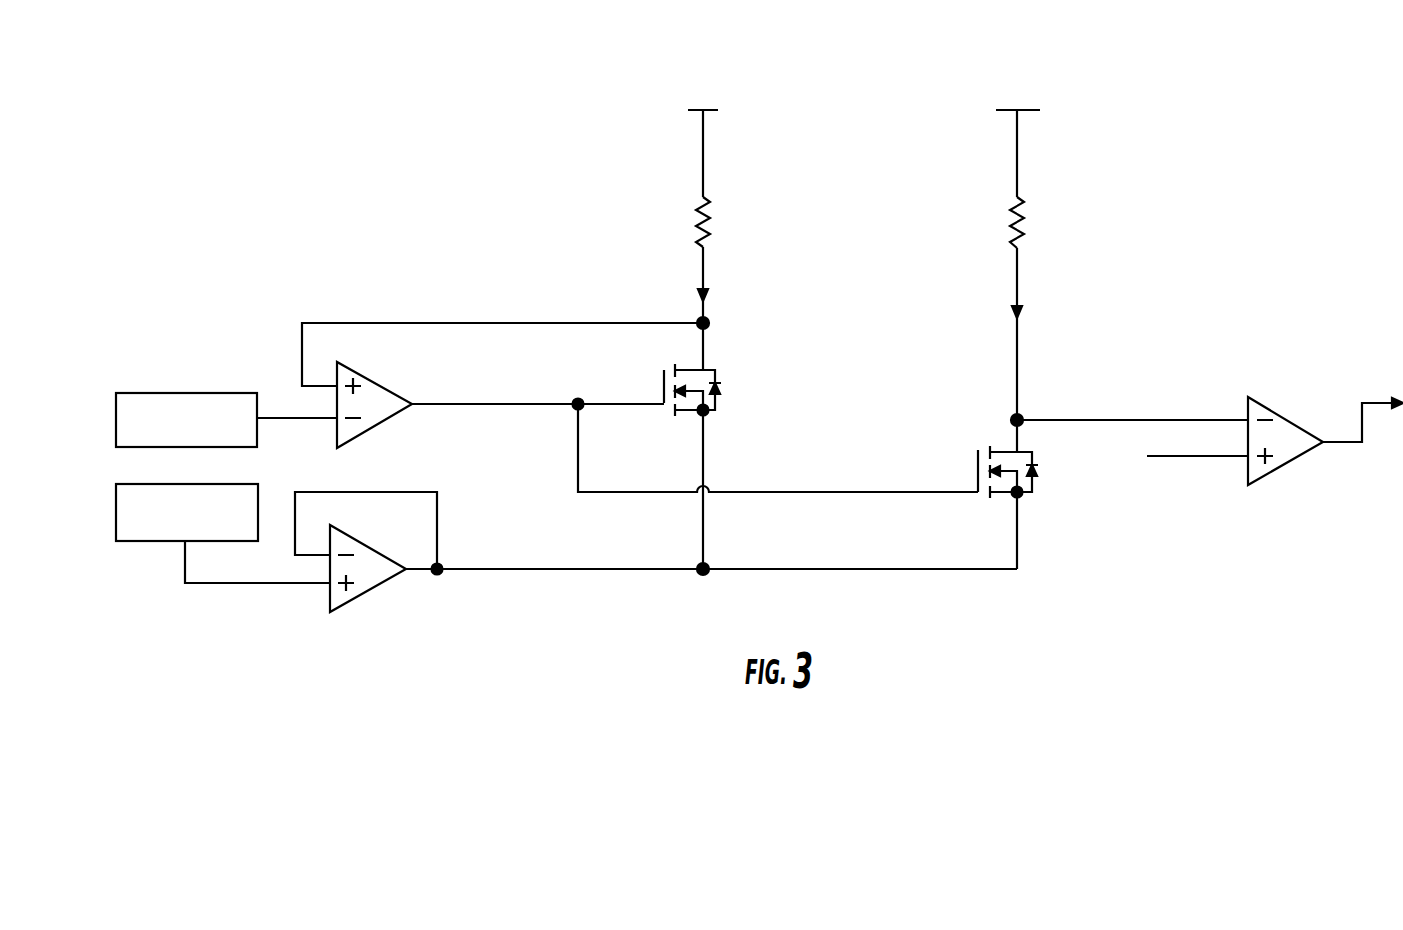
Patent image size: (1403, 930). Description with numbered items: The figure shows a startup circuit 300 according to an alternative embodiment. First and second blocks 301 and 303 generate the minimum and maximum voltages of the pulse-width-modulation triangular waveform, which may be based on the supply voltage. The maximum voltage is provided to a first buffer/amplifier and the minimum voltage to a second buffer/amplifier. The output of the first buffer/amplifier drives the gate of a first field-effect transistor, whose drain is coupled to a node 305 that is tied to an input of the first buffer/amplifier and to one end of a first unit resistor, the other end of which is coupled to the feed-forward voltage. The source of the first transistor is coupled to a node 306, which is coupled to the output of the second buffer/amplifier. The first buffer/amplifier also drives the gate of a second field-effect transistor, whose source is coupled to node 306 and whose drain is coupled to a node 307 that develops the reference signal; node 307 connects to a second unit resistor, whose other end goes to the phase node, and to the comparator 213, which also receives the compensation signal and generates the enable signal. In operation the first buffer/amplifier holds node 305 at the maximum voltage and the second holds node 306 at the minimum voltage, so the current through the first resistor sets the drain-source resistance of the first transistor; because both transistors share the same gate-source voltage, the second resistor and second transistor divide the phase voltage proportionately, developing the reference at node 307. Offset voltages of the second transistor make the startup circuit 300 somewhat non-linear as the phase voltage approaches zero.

The startup circuit 300 is at (352, 161).
The first block 301 is at (222, 392).
The second block 303 is at (148, 542).
The node 305 is at (710, 327).
The node 306 is at (710, 565).
The node 307 is at (1010, 417).
The comparator 213 is at (1283, 415).